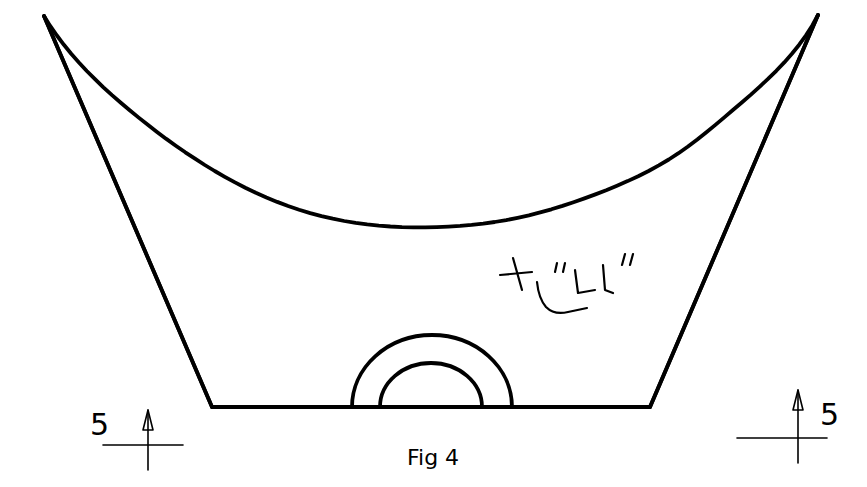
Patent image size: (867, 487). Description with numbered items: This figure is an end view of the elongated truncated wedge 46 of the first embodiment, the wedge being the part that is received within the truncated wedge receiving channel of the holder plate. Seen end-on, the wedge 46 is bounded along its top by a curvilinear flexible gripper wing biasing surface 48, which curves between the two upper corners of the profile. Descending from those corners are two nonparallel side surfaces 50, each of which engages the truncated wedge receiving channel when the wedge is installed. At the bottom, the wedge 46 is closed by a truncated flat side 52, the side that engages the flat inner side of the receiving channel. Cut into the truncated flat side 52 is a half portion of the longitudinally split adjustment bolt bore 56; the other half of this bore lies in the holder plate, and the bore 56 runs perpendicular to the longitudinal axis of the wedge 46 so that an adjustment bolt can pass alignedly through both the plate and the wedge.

The elongated truncated wedge 46 is at (622, 340).
The curvilinear flexible gripper wing biasing surface 48 is at (677, 150).
The nonparallel side surfaces 50 is at (146, 257).
The truncated flat side 52 is at (573, 410).
The adjustment bolt bore 56 is at (447, 355).